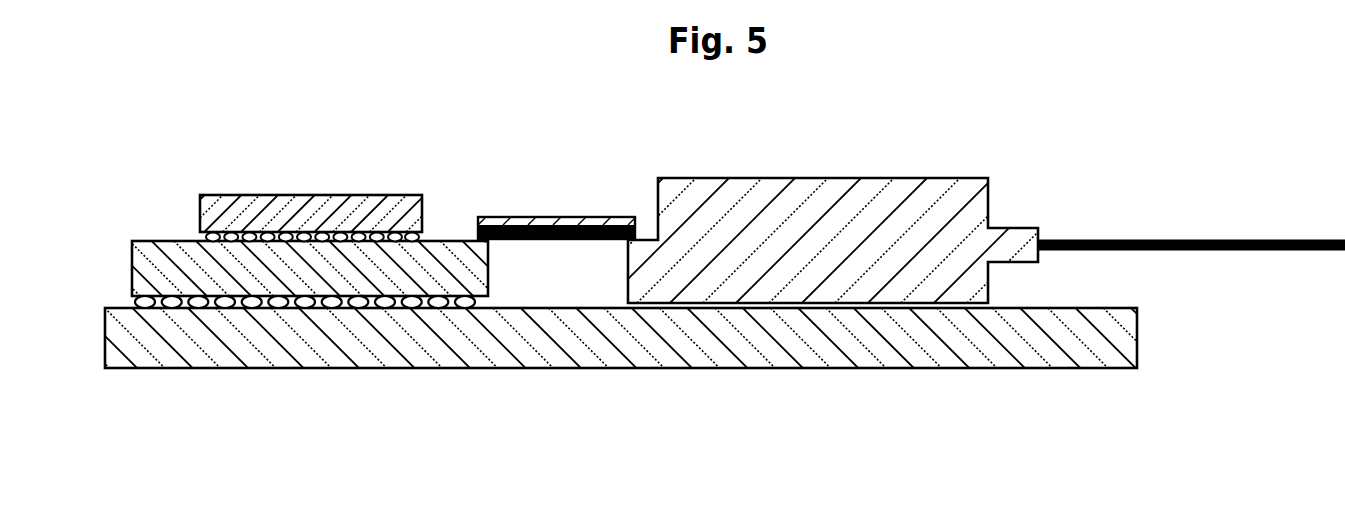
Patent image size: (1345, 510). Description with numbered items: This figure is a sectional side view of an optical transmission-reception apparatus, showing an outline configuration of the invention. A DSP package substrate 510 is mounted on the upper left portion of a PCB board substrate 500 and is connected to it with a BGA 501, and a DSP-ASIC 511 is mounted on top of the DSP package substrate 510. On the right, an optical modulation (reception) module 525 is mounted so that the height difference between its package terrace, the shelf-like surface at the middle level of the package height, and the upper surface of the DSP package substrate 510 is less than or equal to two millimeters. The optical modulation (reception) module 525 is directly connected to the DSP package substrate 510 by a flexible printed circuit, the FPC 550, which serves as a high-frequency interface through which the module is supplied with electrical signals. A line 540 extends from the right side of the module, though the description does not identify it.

The PCB board substrate 500 is at (608, 368).
The BGA 501 is at (118, 300).
The DSP package substrate 510 is at (155, 241).
The DSP-ASIC 511 is at (308, 195).
The FPC 550 is at (557, 217).
The optical modulation (reception) module 525 is at (803, 178).
The cable / wire 540 is at (1173, 239).